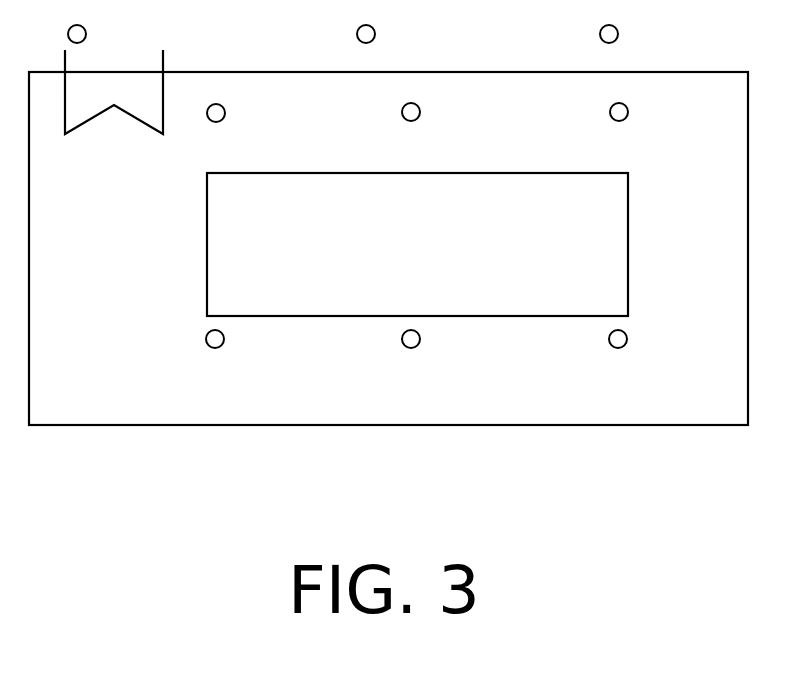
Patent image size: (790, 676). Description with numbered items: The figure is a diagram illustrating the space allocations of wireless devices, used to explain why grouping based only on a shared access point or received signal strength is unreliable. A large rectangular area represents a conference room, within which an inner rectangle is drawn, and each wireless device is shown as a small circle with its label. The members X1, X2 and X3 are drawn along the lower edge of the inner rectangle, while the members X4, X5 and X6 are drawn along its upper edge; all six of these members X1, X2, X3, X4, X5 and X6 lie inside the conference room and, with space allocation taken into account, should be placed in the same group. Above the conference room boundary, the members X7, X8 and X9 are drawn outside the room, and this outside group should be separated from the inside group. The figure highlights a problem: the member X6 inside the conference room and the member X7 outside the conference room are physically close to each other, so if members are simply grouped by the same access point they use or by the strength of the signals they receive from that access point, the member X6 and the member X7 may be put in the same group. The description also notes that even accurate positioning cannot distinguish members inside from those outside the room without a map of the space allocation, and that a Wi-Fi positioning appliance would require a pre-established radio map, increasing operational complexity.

The member (wireless device) X1 is at (214, 364).
The member (wireless device) X2 is at (412, 364).
The member (wireless device) X3 is at (619, 364).
The member (wireless device) X4 is at (624, 137).
The member (wireless device) X5 is at (410, 137).
The member (wireless device) X6 is at (219, 137).
The member (wireless device) X7 is at (104, 32).
The member (wireless device) X8 is at (391, 32).
The member (wireless device) X9 is at (636, 32).